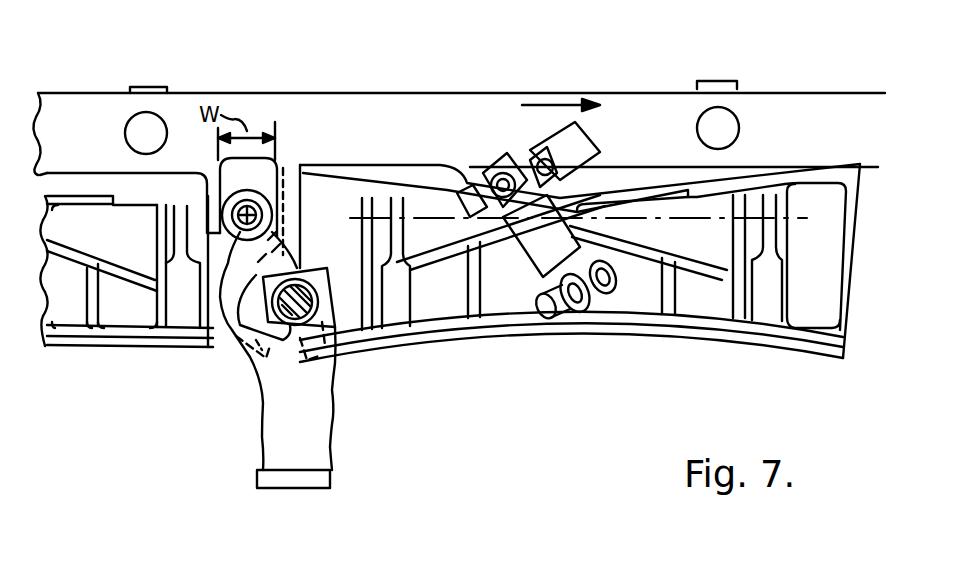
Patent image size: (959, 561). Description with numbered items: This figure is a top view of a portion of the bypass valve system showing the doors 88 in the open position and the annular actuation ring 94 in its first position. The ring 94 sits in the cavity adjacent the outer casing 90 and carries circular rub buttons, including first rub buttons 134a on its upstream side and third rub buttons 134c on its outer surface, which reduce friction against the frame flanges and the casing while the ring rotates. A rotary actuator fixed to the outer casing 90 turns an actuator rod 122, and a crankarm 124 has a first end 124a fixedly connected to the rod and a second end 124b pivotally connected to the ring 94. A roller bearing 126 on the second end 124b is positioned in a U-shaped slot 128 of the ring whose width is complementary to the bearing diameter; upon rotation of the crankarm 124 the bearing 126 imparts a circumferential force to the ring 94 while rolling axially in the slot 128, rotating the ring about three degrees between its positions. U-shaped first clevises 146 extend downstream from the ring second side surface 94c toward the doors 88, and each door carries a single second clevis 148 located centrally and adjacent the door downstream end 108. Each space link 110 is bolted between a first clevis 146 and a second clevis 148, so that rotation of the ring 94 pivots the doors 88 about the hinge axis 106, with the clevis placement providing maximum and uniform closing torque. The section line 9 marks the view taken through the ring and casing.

The section line 9- 9 is at (145, 178).
The door 88 is at (545, 322).
The outer casing 90 is at (296, 502).
The annular actuation ring 94 is at (870, 167).
The ring second side surface 94c is at (48, 172).
The hinge axis 106 is at (796, 201).
The door downstream end 108 is at (682, 318).
The space link 110 is at (521, 270).
The actuator rod 122 is at (262, 398).
The crankarm 124 is at (300, 255).
The crankarm first end 124a is at (310, 373).
The crankarm second end 124b is at (232, 342).
The roller bearing 126 is at (278, 160).
The U-shaped slot 128 is at (208, 213).
The first rub buttons 134a is at (128, 88).
The third rub buttons 134c is at (740, 128).
The first clevis 146 is at (471, 163).
The second clevis 148 is at (610, 304).